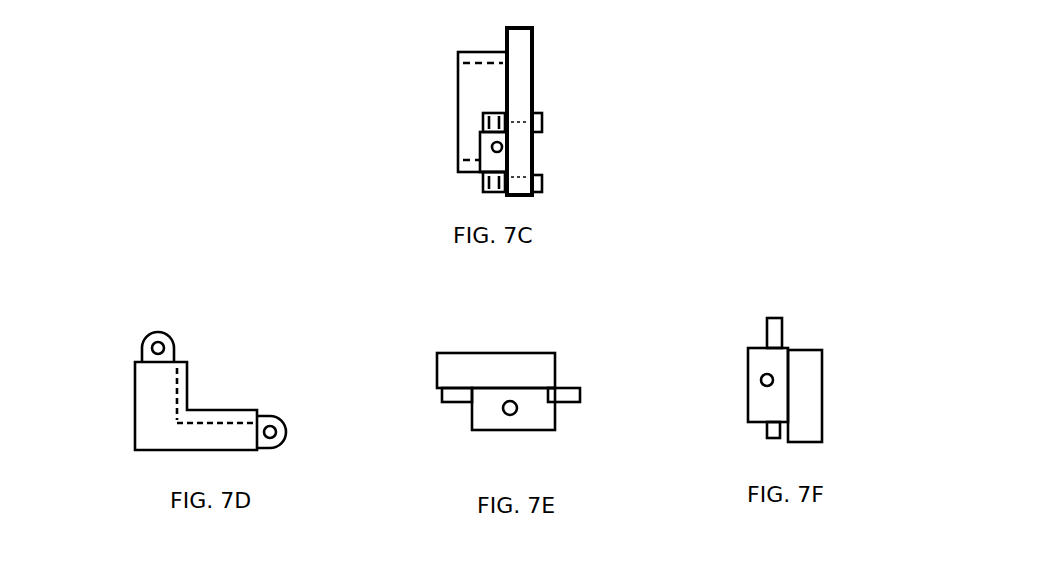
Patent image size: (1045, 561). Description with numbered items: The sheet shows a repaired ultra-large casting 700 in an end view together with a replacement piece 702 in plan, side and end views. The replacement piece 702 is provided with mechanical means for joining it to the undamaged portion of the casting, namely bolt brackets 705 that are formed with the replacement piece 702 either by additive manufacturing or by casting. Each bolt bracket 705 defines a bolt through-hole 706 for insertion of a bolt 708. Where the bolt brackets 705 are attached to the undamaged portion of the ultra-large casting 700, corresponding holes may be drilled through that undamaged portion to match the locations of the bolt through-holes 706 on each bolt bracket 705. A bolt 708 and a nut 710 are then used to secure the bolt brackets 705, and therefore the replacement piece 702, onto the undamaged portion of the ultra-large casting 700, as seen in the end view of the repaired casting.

In FIG. 7C, the repaired ultra-large casting 700 is at (531, 110).
In FIG. 7D, the replacement piece 702 is at (155, 339).
In FIG. 7E, the replacement piece 702 is at (552, 396).
In FIG. 7F, the replacement piece 702 is at (843, 378).
In FIG. 7D, the bolt bracket 705 is at (173, 352).
In FIG. 7E, the bolt bracket 705 is at (538, 412).
In FIG. 7F, the bolt bracket 705 is at (800, 388).
In FIG. 7D, the bolt through-hole 706 is at (157, 340).
In FIG. 7C, the bolt 708 is at (492, 129).
In FIG. 7C, the nut 710 is at (543, 128).